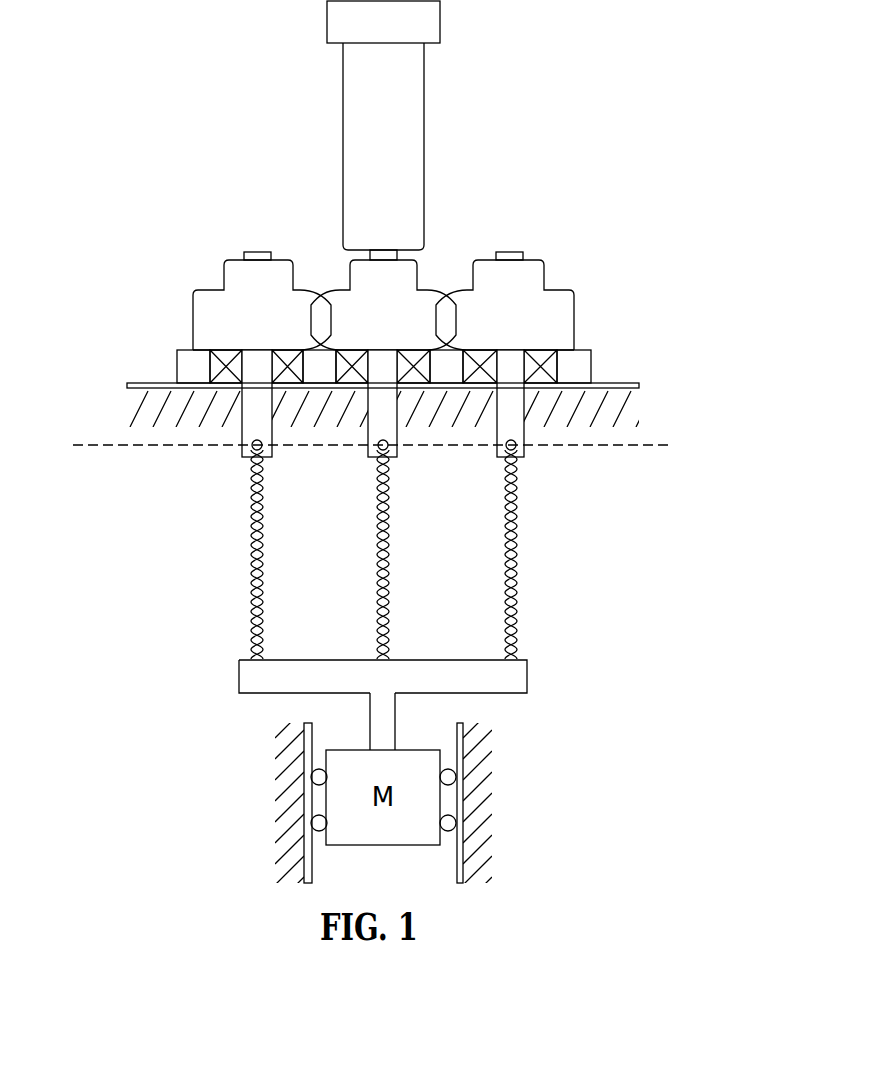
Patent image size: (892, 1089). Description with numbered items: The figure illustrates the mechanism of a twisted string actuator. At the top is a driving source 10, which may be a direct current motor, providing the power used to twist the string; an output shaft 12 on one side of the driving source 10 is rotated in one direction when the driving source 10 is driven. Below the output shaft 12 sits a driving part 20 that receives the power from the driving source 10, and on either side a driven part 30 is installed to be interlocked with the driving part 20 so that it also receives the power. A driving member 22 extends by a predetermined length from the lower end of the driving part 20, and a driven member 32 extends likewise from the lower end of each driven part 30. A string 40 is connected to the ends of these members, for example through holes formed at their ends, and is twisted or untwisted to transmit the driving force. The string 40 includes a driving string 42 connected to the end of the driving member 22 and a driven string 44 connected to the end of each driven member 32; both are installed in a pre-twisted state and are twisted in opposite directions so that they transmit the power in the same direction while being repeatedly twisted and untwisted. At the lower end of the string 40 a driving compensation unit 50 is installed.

The driving source 10 is at (424, 127).
The output shaft 12 is at (387, 255).
The driving part 20 is at (405, 272).
The driven part 30 is at (238, 293).
The driven member 32 is at (248, 430).
The driving member 22 is at (400, 430).
The string 40 is at (367, 566).
The driving string 42 is at (377, 578).
The driven string 44 is at (250, 607).
The driving compensation unit 50 is at (527, 677).